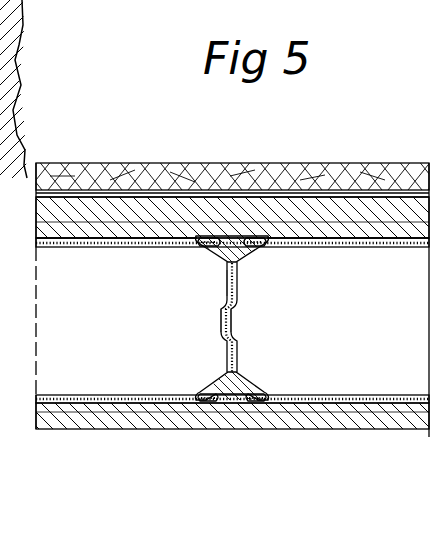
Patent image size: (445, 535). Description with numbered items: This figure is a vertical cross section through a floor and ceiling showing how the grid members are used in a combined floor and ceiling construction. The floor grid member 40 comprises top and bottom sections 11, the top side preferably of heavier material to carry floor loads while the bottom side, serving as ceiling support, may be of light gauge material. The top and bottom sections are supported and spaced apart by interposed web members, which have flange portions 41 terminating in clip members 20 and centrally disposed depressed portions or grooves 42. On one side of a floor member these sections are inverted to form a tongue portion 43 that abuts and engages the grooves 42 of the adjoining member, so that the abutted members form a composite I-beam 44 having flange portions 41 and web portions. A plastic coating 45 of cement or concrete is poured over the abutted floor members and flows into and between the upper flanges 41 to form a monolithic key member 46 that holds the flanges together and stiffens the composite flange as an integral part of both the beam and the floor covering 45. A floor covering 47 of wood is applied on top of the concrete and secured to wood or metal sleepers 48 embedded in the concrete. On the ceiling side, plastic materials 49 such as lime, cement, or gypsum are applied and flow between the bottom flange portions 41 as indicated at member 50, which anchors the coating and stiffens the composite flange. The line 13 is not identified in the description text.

The top and bottom sections 11 is at (132, 248).
The wall surface line 13 is at (385, 245).
The clip members 20 is at (197, 247).
The floor grid member 40 is at (102, 346).
The flange portions 41 is at (211, 256).
The depressed portions or grooves 42 is at (222, 327).
The tongue portion 43 is at (233, 329).
The composite I-beam 44 is at (247, 305).
The plastic coating 45 is at (340, 226).
The monolithic key member 46 is at (221, 263).
The floor covering 47 is at (138, 177).
The sleepers 48 is at (68, 180).
The plastic materials 49 is at (251, 421).
The member 50 is at (239, 378).